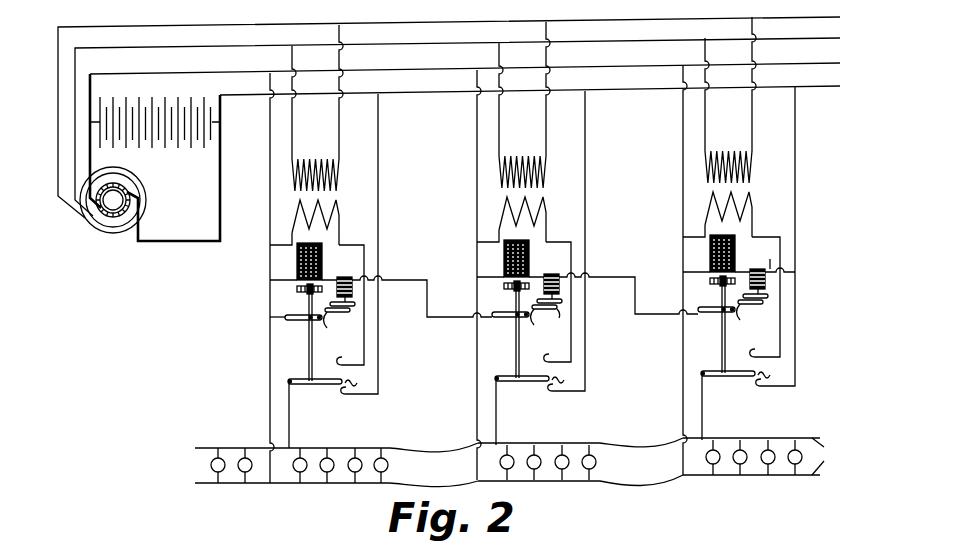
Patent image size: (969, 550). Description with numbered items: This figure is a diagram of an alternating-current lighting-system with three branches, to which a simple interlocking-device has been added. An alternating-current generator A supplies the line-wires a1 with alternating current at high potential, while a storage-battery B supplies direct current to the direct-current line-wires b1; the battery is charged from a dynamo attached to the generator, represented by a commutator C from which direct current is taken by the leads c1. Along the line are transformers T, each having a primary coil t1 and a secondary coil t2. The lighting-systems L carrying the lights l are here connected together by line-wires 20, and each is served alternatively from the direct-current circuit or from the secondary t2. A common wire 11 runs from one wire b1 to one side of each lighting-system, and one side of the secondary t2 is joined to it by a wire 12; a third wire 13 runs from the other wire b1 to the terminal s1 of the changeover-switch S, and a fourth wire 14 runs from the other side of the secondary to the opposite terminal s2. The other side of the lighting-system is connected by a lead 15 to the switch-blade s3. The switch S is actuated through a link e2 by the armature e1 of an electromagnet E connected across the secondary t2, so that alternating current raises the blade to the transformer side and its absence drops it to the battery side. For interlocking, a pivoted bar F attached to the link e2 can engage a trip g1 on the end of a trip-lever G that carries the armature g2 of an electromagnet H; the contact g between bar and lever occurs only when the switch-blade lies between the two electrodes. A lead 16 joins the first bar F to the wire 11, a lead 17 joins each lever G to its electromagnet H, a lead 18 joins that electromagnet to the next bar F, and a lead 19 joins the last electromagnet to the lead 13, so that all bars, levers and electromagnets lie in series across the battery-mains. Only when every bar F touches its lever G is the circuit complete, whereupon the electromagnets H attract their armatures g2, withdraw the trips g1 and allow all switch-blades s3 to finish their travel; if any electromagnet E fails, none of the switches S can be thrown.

The line-wires a1 is at (75, 158).
The direct-current line-wires b1 is at (446, 88).
The leads c1 is at (92, 163).
The alternating-current generator A is at (113, 200).
The storage-battery B is at (183, 146).
The commutator C is at (110, 214).
The transformer T is at (524, 198).
The primary coil t1 is at (532, 171).
The secondary coil t2 is at (532, 218).
The electromagnet or solenoid E is at (506, 257).
The armature e1 is at (504, 286).
The link e2 is at (505, 332).
The electromagnet or solenoid H is at (551, 273).
The pivoted bar F is at (508, 327).
The trip-lever G is at (544, 317).
The contact g is at (565, 318).
The trip g1 is at (536, 325).
The armature g2 is at (557, 304).
The changeover-switch S is at (521, 388).
The terminal s1 is at (554, 397).
The terminal s2 is at (544, 351).
The switch-blade s3 is at (563, 377).
The lighting-system L is at (356, 448).
The lights l is at (506, 459).
The common wire 11 is at (467, 274).
The wire 12 is at (487, 234).
The third wire 13 is at (582, 240).
The fourth wire 14 is at (561, 294).
The lead 15 is at (509, 412).
The lead 16 is at (281, 307).
The lead 17 is at (527, 302).
The lead 18 is at (484, 288).
The lead 19 is at (771, 257).
The line-wires 20 is at (444, 486).